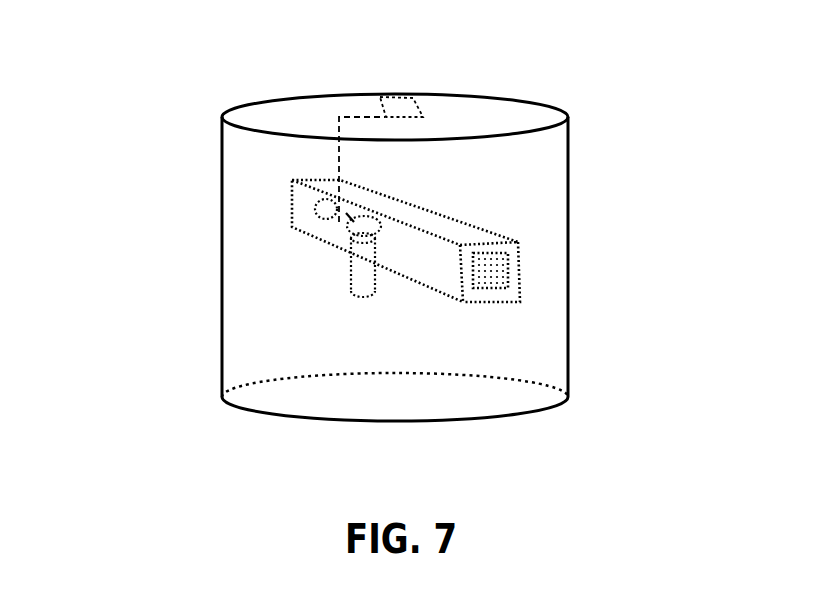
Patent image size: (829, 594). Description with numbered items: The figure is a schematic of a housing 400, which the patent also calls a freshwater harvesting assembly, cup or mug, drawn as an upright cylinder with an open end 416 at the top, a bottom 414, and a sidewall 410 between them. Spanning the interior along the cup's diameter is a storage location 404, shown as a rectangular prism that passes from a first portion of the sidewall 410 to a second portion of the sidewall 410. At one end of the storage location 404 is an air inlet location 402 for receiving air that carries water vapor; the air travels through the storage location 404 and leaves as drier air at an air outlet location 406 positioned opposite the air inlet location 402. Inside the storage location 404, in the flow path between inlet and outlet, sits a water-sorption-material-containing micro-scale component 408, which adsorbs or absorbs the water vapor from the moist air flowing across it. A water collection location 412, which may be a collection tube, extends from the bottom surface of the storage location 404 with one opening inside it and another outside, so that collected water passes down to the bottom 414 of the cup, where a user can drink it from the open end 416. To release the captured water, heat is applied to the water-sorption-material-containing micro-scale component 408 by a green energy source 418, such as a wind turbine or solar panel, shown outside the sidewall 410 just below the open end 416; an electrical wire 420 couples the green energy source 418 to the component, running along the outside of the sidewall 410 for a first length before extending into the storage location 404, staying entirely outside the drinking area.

The housing 400 is at (148, 90).
The air inlet location 402 is at (522, 292).
The storage location 404 is at (447, 223).
The air outlet location 406 is at (317, 212).
The water-sorption-material-containing micro-scale component 408 is at (345, 225).
The sidewall 410 is at (550, 232).
The water collection location 412 is at (350, 282).
The bottom 414 is at (467, 395).
The open end 416 is at (278, 125).
The green energy source 418 is at (418, 113).
The electrical wire 420 is at (343, 115).